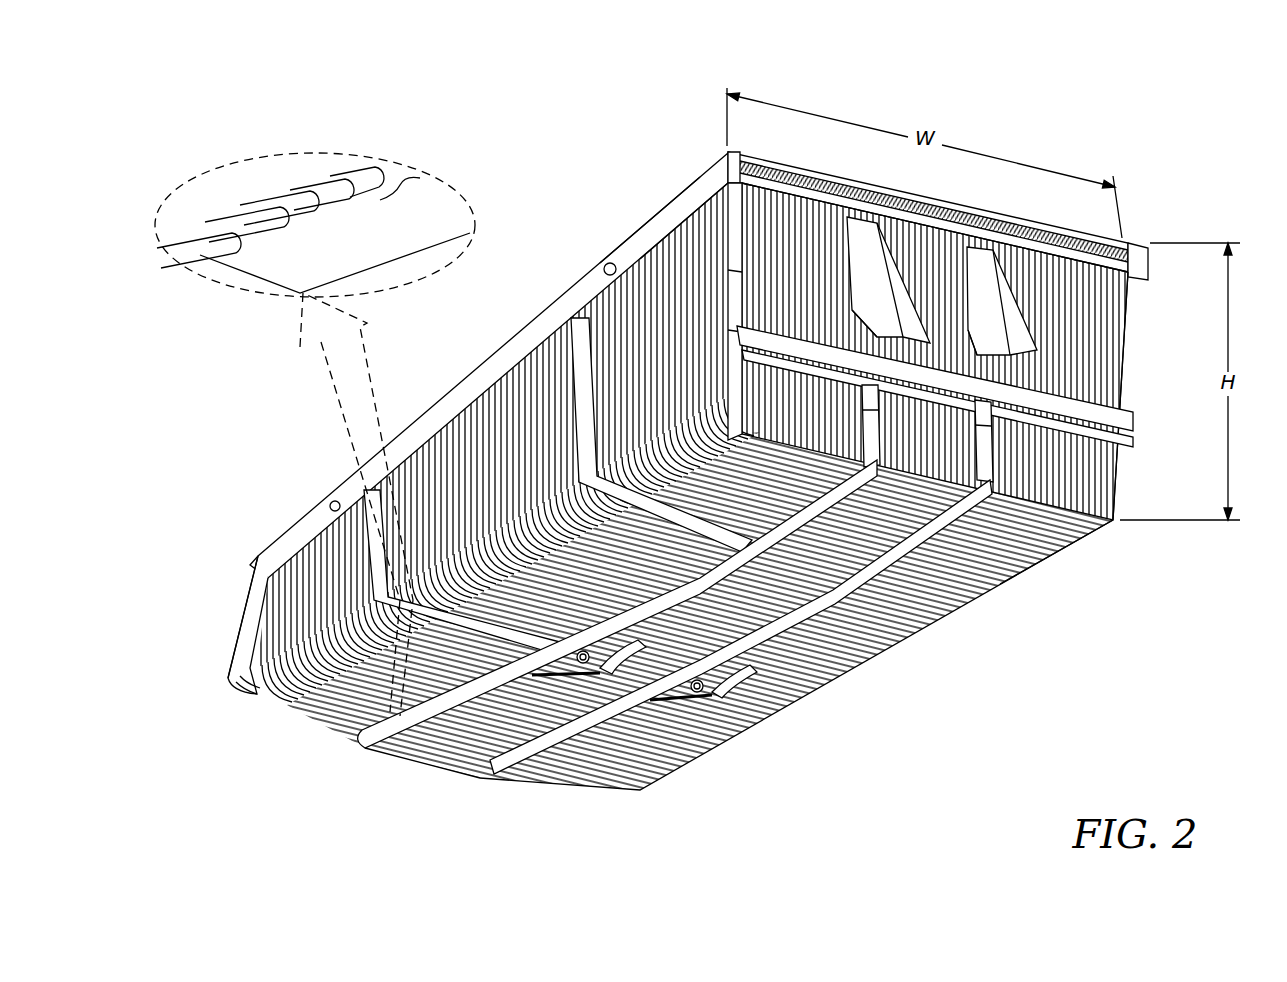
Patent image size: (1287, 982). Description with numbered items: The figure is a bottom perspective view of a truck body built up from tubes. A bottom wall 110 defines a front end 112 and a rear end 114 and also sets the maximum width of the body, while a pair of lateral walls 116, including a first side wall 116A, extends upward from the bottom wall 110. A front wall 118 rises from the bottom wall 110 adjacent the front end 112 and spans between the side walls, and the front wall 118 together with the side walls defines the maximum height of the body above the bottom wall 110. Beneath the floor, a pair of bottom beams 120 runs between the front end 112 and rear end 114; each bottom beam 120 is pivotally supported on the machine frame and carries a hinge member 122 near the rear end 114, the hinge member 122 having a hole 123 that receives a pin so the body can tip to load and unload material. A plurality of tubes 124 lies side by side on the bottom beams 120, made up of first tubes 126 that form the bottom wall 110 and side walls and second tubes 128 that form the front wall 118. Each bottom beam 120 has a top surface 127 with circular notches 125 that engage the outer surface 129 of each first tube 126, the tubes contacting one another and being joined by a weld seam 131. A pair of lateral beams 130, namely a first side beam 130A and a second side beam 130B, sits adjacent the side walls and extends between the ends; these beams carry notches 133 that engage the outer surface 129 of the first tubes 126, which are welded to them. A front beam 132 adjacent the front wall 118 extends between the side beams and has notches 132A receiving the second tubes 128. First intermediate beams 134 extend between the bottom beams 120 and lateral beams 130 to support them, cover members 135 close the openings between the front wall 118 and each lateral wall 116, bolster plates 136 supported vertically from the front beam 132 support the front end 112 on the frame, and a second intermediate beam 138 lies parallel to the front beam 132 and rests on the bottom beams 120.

The bottom wall 110 is at (860, 612).
The front end 112 is at (1103, 533).
The rear end 114 is at (238, 704).
The pair of lateral walls 116 is at (715, 150).
The first side wall 116A is at (615, 340).
The front wall 118 is at (1130, 326).
The bottom beams 120 is at (466, 735).
The hinge member 122 is at (618, 674).
The hole 123 is at (557, 674).
The plurality of tubes 124 is at (1133, 412).
The notches 125 is at (247, 232).
The first tubes 126 is at (297, 708).
The top surface 127 is at (990, 448).
The second tubes 128 is at (1100, 233).
The outer surface 129 is at (340, 175).
The pair of lateral beams 130 is at (531, 298).
The first side beam 130A is at (638, 227).
The second side beam 130B is at (1133, 244).
The weld seam 131 is at (392, 180).
The front beam 132 is at (1133, 284).
The notches 132A is at (785, 192).
The notches 133 is at (686, 222).
The first intermediate beams 134 is at (570, 413).
The cover members 135 is at (735, 272).
The bolster plates 136 is at (935, 345).
The second intermediate beam 138 is at (1130, 440).